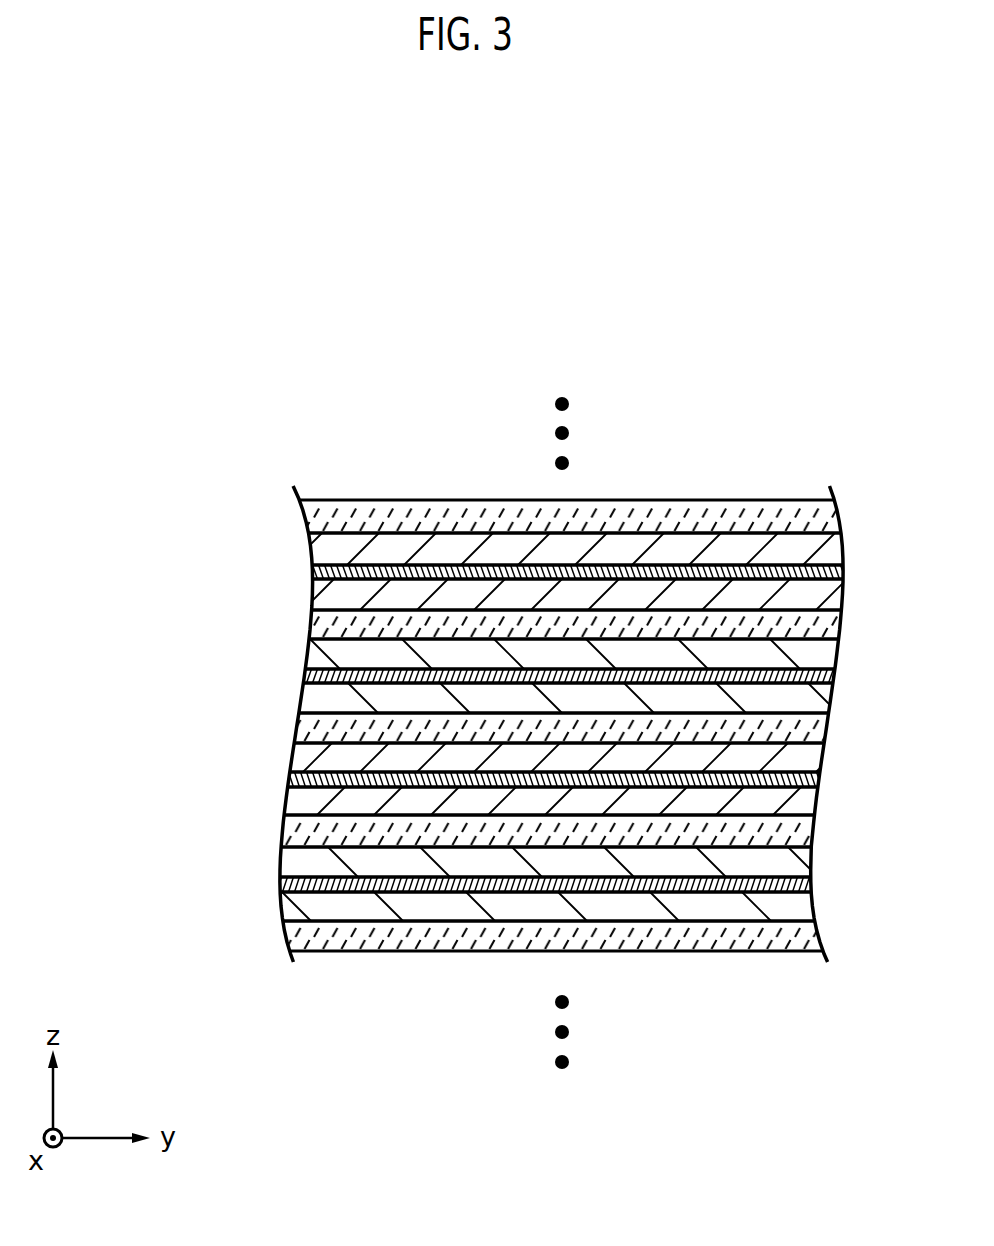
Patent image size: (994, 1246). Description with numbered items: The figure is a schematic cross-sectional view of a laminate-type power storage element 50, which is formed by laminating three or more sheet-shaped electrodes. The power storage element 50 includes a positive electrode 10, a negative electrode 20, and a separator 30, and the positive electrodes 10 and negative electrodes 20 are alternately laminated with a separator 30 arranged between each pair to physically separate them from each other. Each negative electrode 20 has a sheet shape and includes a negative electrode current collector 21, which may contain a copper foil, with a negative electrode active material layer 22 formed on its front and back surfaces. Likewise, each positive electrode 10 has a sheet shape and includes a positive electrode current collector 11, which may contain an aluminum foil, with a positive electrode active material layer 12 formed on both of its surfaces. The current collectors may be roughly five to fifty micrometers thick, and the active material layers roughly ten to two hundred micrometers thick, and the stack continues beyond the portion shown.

The power storage element 50 is at (811, 398).
The separator 30 is at (886, 935).
The negative electrode 20 is at (491, 671).
The negative electrode active material layer 22 is at (286, 801).
The negative electrode current collector 21 is at (289, 780).
The positive electrode 10 is at (491, 779).
The positive electrode active material layer 12 is at (281, 906).
The positive electrode current collector 11 is at (280, 885).